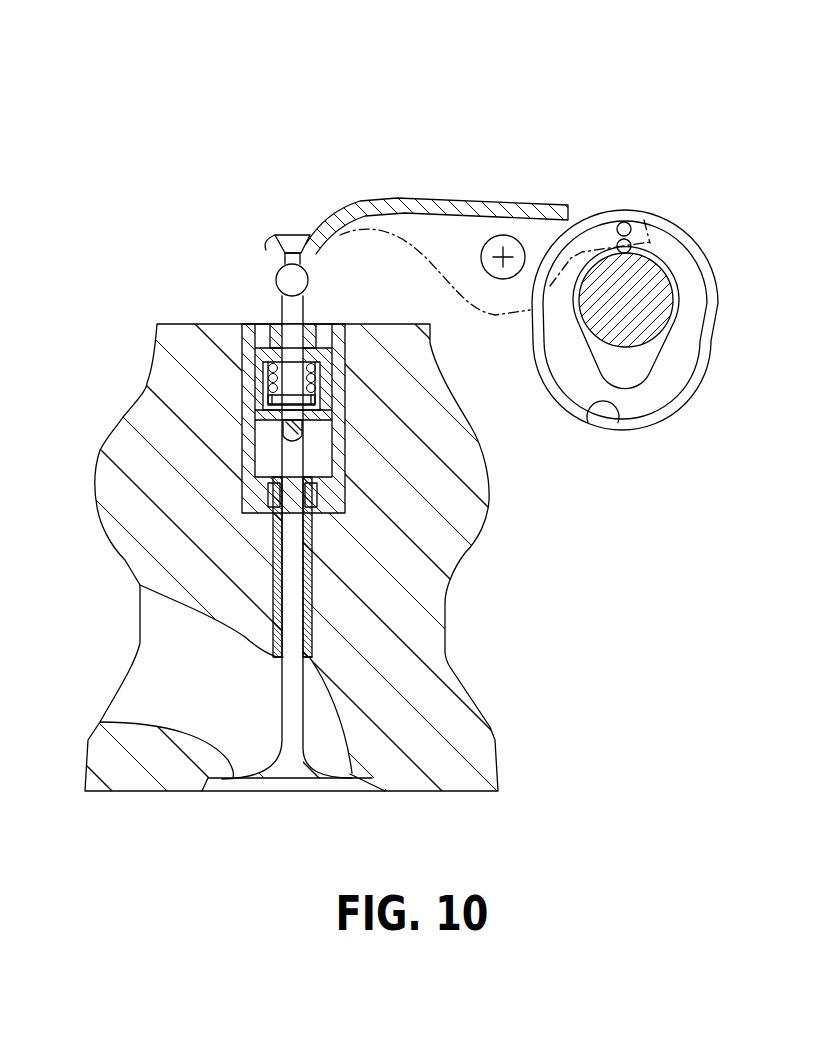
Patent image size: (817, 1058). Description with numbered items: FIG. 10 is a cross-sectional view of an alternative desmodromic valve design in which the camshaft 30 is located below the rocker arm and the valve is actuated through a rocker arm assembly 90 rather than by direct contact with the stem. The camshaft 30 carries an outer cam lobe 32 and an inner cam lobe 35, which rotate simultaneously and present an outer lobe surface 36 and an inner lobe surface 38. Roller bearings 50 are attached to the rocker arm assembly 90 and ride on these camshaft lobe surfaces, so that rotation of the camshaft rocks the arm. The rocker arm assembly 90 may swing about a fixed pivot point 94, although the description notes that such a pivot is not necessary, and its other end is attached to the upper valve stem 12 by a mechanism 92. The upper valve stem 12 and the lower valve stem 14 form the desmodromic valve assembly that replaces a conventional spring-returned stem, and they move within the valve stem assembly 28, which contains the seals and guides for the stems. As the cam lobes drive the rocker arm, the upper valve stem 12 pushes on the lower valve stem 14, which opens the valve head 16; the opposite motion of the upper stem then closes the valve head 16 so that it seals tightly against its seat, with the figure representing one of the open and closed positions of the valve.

The upper valve stem 12 is at (288, 313).
The lower valve stem 14 is at (292, 673).
The valve head 16 is at (290, 777).
The valve stem assembly 28 is at (356, 378).
The camshaft 30 is at (647, 277).
The outer cam lobe 32 is at (716, 273).
The inner cam lobe 35 is at (692, 314).
The outer lobe surface 36 is at (603, 403).
The inner lobe surface 38 is at (588, 364).
The roller bearings 50 is at (641, 220).
The rocker arm assembly 90 is at (362, 193).
The mechanism 92 is at (292, 243).
The fixed pivot point 94 is at (514, 246).